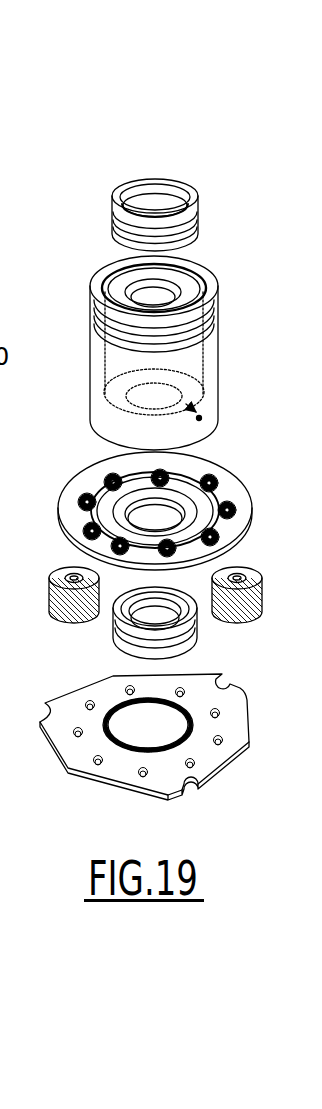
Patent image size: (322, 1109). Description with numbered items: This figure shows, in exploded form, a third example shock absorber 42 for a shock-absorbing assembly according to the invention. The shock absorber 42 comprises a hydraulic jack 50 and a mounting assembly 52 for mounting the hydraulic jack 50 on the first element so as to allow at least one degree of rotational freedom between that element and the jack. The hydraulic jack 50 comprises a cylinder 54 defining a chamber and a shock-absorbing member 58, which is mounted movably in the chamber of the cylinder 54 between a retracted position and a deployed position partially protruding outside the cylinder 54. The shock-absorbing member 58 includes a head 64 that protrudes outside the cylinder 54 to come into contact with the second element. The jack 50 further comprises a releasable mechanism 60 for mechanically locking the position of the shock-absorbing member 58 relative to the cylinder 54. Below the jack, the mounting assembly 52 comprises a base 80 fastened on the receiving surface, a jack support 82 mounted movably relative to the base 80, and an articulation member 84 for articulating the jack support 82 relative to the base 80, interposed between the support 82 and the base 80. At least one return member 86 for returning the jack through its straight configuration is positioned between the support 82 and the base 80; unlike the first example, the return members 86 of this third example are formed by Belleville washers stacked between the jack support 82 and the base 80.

The shock absorber 42 is at (157, 168).
The head 64 is at (182, 186).
The shock-absorbing member 58 is at (232, 236).
The releasable mechanism 60 is at (230, 276).
The hydraulic jack 50 is at (244, 348).
The cylinder 54 is at (205, 380).
The jack support 82 is at (222, 482).
The return member 86 is at (66, 617).
The articulation member 84 is at (183, 647).
The base 80 is at (222, 745).
The mounting assembly 52 is at (62, 775).